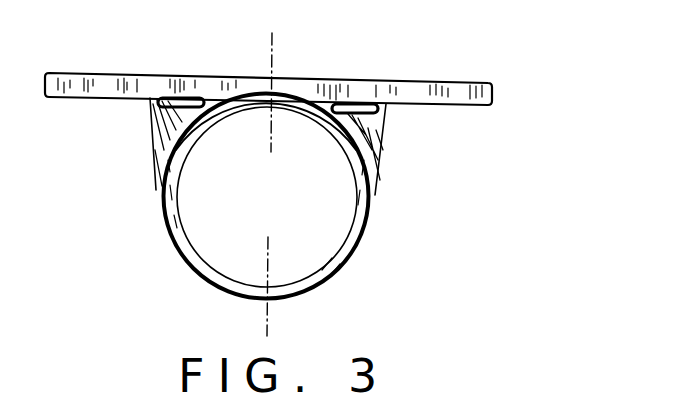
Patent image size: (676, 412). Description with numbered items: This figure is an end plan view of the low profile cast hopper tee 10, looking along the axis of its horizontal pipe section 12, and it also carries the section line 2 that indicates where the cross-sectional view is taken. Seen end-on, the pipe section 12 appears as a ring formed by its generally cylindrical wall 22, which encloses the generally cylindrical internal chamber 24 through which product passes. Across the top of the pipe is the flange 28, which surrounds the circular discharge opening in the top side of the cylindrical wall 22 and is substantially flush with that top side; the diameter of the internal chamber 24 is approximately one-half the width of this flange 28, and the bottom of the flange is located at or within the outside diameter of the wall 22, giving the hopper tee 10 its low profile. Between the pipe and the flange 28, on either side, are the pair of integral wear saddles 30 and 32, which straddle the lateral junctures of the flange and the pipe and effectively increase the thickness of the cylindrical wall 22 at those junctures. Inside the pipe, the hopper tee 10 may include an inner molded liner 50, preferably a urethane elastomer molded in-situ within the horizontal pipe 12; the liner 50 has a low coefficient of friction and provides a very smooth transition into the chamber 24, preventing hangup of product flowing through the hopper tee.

The section line 2- 2 is at (272, 33).
The cast hopper tee 10 is at (538, 100).
The horizontal pipe section 12 is at (363, 237).
The cylindrical wall 22 is at (203, 276).
The internal chamber 24 is at (267, 197).
The flange 28 is at (343, 92).
The wear saddle 30 is at (165, 112).
The wear saddle 32 is at (367, 121).
The inner molded liner 50 is at (345, 265).